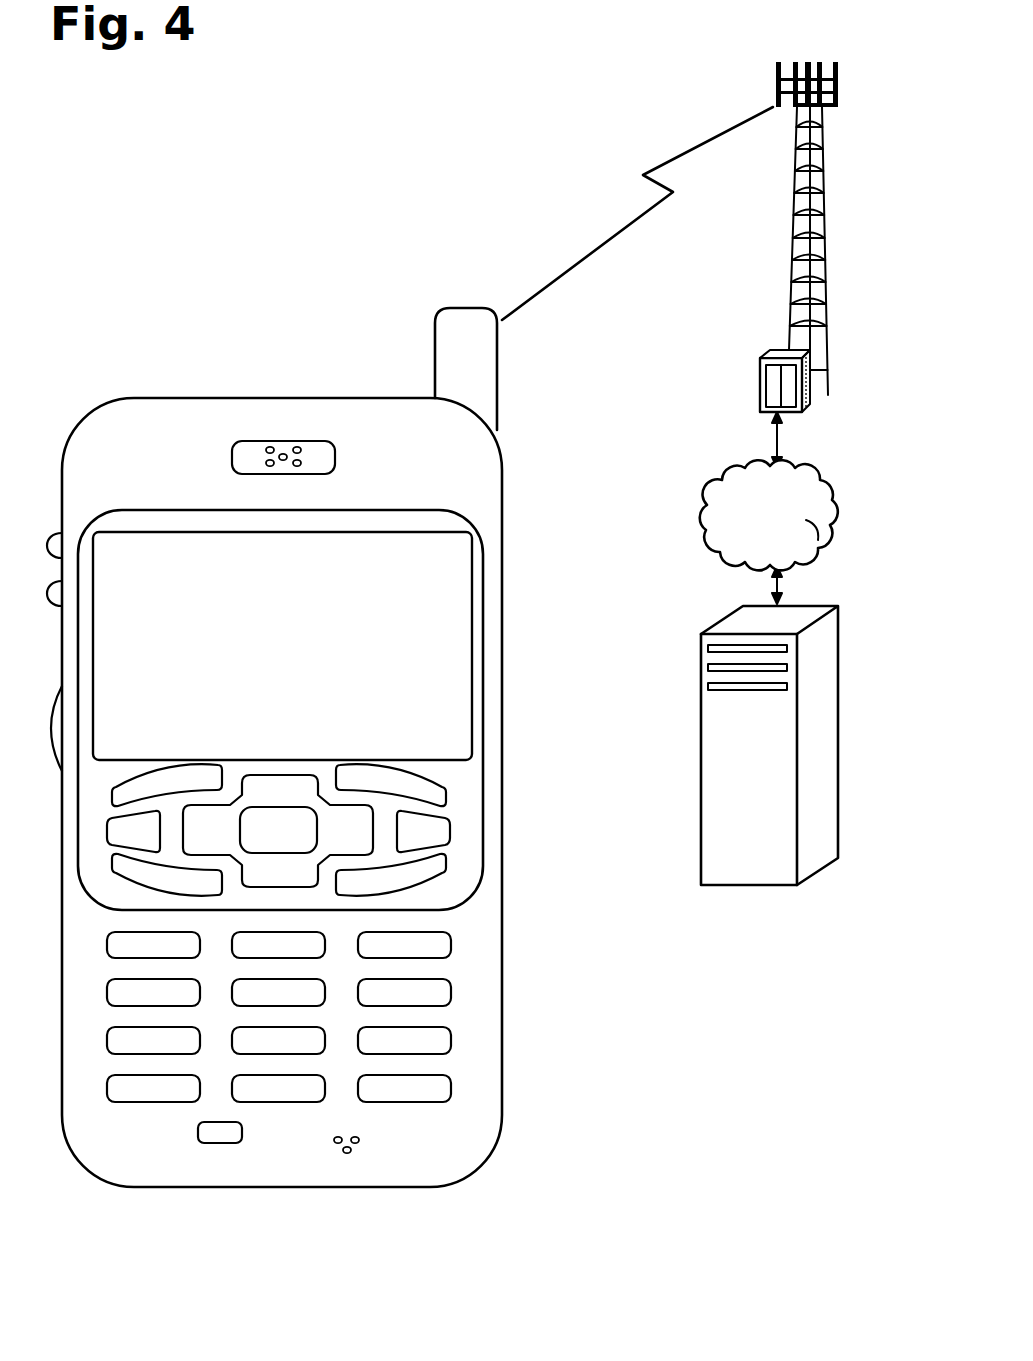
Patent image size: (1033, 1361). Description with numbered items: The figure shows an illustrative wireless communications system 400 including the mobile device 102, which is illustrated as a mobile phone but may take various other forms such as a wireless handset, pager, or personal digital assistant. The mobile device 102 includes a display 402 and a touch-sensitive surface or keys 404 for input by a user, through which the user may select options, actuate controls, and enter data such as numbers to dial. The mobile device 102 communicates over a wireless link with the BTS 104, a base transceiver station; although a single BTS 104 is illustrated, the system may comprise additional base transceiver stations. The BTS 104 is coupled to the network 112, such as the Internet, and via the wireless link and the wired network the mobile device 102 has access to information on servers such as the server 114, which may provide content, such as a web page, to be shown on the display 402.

The wireless communications system 400 is at (497, 103).
The mobile device 102 is at (324, 763).
The BTS 104 is at (793, 252).
The network 112 is at (705, 538).
The server 114 is at (760, 886).
The display 402 is at (465, 662).
The keys 404 is at (507, 765).